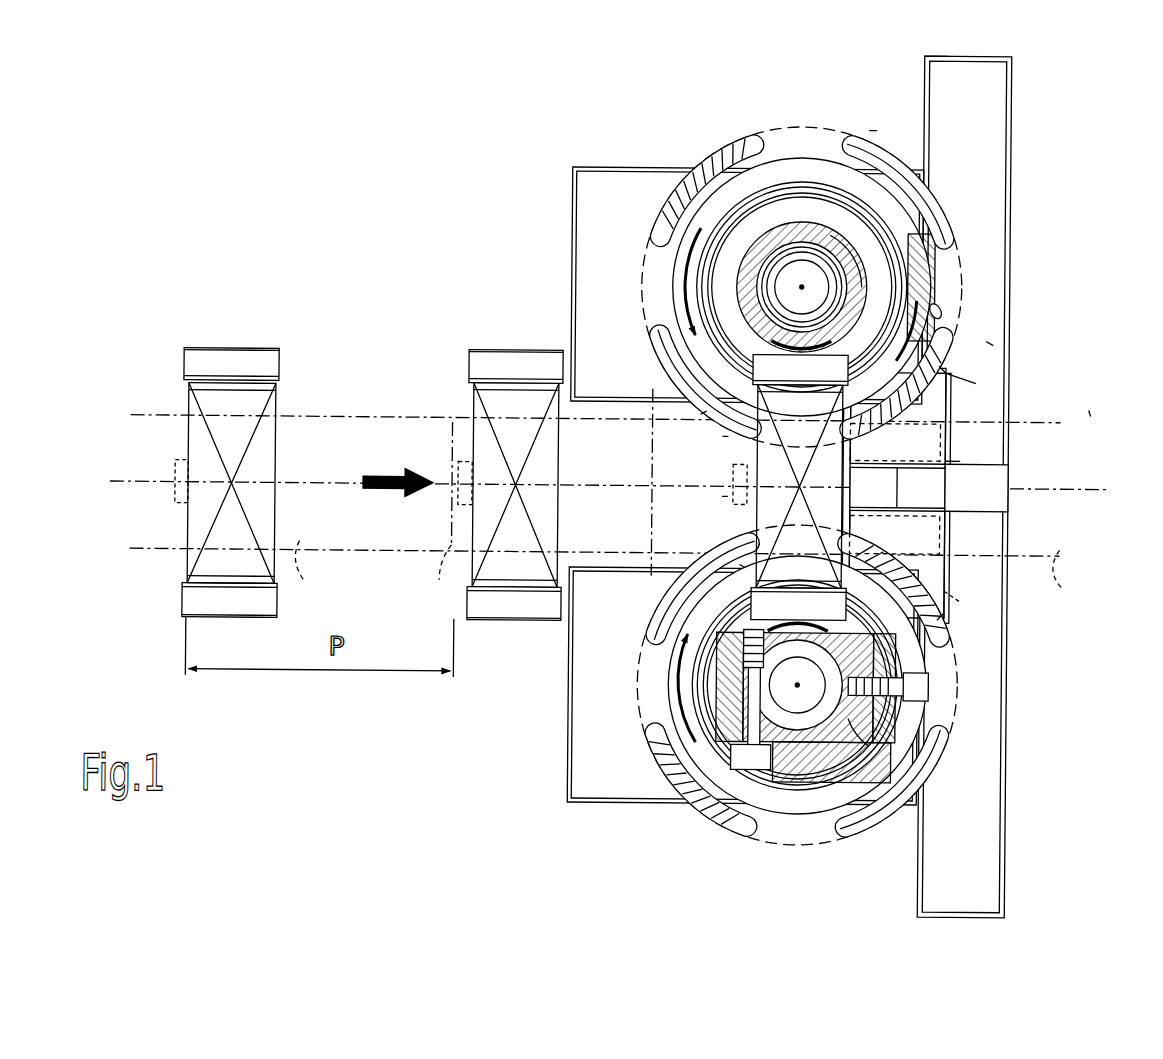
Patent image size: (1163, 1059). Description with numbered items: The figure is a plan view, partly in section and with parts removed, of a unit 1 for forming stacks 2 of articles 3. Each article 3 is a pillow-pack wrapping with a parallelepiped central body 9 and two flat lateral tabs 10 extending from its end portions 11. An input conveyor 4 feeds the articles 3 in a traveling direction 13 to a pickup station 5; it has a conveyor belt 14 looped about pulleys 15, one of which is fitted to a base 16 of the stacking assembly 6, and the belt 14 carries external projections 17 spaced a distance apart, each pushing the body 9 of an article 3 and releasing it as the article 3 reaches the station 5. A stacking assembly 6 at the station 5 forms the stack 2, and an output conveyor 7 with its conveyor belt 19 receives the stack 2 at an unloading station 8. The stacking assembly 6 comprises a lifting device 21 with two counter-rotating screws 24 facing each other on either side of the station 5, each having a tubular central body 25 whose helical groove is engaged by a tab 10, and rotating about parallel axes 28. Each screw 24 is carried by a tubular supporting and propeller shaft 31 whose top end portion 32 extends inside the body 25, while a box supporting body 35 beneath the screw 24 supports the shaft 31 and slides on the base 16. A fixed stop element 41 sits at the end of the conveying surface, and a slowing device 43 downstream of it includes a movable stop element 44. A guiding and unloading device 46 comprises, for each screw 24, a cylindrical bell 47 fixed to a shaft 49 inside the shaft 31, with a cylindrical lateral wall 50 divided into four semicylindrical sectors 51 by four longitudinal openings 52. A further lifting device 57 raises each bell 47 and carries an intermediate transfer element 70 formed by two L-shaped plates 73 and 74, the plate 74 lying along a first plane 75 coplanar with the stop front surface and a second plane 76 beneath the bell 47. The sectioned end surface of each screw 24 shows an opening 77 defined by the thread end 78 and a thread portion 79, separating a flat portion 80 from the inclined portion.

The unit for forming stacks 1 is at (331, 175).
The stack 2 is at (722, 437).
The article 3 is at (280, 400).
The input conveyor 4 is at (148, 416).
The pickup station 5 is at (722, 497).
The stacking assembly 6 is at (870, 130).
The output conveyor 7 is at (1090, 408).
The unloading station 8 is at (960, 460).
The central body 9 is at (252, 477).
The lateral tab 10 is at (222, 367).
The end portion 11 is at (190, 405).
The traveling direction 13 is at (388, 482).
The conveyor belt 14 is at (309, 573).
The pulley 15 is at (435, 571).
The base 16 is at (937, 74).
The external projection 17 is at (178, 510).
The conveyor belt 19 is at (1070, 574).
The lifting device 21 is at (988, 338).
The screw 24 is at (803, 125).
The tubular central body 25 is at (838, 250).
The axis 28 is at (803, 240).
The tubular supporting and propeller shaft 31 is at (750, 255).
The top end portion 32 is at (872, 290).
The box supporting body 35 is at (608, 166).
The fixed stop element 41 is at (945, 590).
The slowing device 43 is at (1012, 480).
The stop element 44 is at (880, 487).
The guiding and unloading device 46 is at (928, 178).
The cylindrical bell 47 is at (720, 136).
The shaft 49 is at (788, 280).
The cylindrical lateral wall 50 is at (698, 161).
The semicylindrical sector 51 is at (868, 160).
The longitudinal opening 52 is at (856, 146).
The further lifting device 57 is at (975, 382).
The intermediate transfer element 70 is at (985, 500).
The L-shaped plate 73 is at (830, 380).
The L-shaped plate 74 is at (952, 440).
The first plane 75 is at (870, 452).
The second plane 76 is at (940, 412).
The opening 77 is at (676, 265).
The end of thread 78 is at (700, 415).
The thread portion 79 is at (868, 250).
The flat portion 80 is at (845, 375).